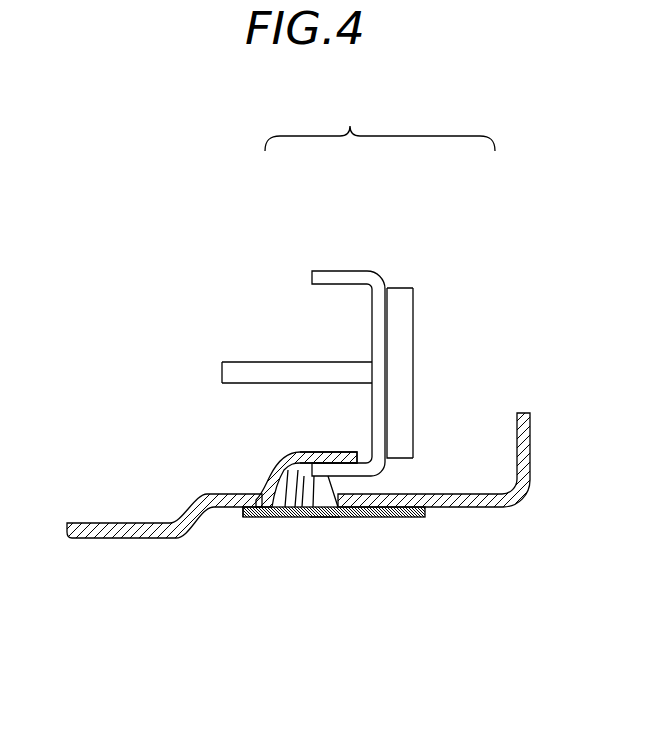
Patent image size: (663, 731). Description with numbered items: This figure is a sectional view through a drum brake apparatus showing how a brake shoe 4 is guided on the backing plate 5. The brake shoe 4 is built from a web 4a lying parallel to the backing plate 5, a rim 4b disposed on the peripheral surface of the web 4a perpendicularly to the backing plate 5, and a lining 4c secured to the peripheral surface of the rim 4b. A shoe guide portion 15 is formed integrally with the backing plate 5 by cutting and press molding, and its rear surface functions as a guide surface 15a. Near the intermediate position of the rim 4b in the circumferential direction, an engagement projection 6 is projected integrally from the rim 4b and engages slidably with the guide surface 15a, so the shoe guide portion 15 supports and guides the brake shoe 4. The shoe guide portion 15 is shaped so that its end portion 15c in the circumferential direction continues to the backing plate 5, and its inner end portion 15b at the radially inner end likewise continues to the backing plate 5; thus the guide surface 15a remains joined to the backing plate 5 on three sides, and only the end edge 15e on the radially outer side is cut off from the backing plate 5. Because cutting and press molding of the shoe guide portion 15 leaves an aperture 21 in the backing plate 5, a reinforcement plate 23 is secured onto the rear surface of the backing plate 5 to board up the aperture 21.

The brake shoe 4 is at (358, 283).
The web 4a is at (272, 362).
The rim 4b is at (353, 270).
The lining 4c is at (402, 288).
The backing plate 5 is at (93, 510).
The engagement projection 6 is at (323, 518).
The shoe guide portion 15 is at (331, 502).
The guide surface 15a is at (302, 518).
The inner end portion 15b is at (268, 478).
The end portion 15c is at (276, 518).
The end edge 15e is at (358, 459).
The aperture 21 is at (397, 518).
The reinforcement plate 23 is at (253, 518).